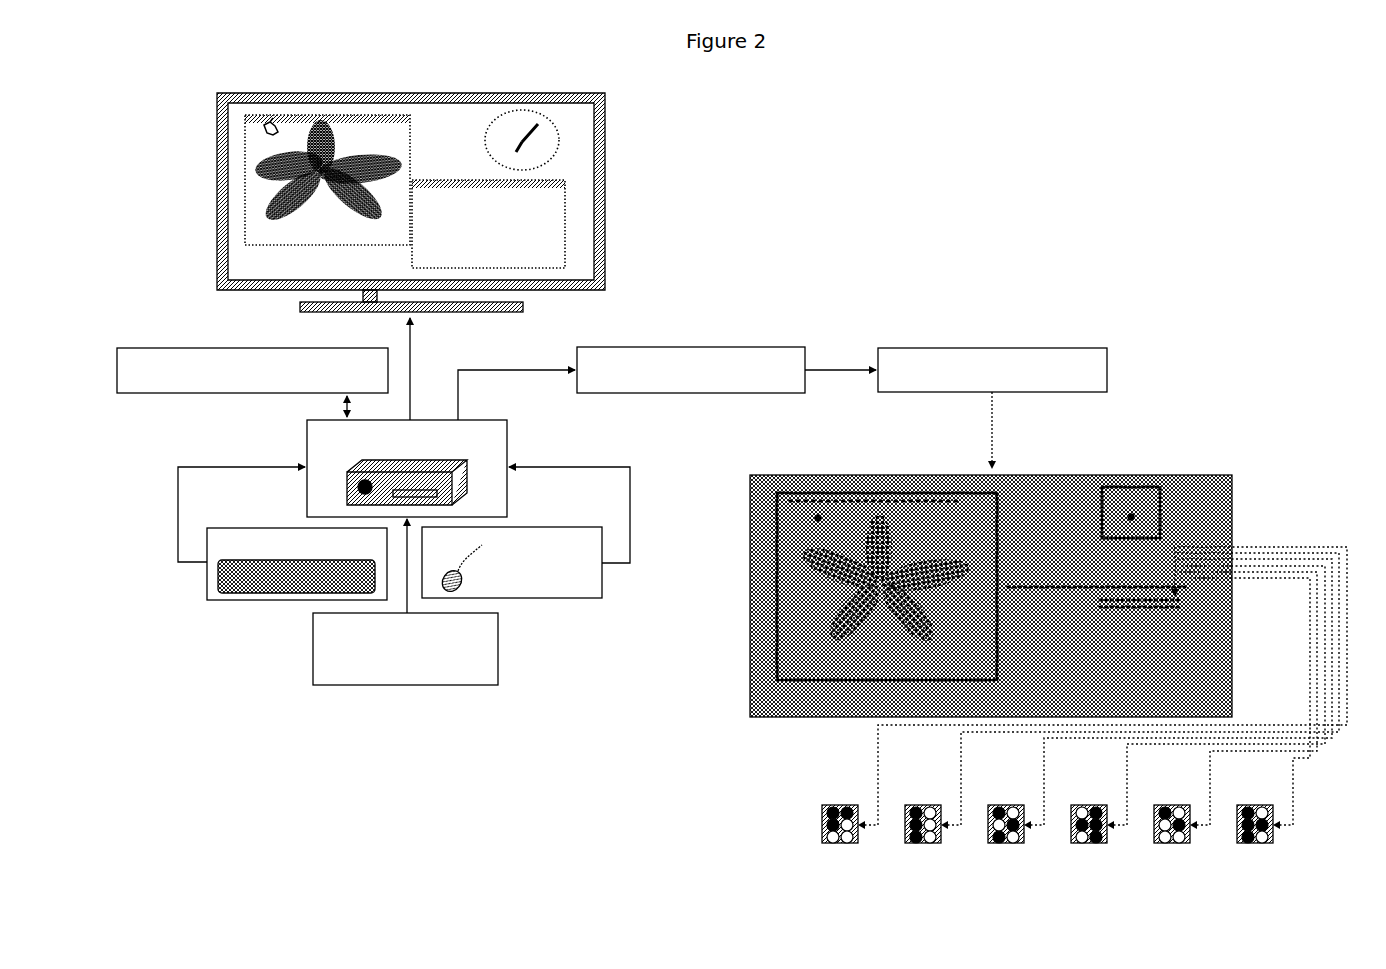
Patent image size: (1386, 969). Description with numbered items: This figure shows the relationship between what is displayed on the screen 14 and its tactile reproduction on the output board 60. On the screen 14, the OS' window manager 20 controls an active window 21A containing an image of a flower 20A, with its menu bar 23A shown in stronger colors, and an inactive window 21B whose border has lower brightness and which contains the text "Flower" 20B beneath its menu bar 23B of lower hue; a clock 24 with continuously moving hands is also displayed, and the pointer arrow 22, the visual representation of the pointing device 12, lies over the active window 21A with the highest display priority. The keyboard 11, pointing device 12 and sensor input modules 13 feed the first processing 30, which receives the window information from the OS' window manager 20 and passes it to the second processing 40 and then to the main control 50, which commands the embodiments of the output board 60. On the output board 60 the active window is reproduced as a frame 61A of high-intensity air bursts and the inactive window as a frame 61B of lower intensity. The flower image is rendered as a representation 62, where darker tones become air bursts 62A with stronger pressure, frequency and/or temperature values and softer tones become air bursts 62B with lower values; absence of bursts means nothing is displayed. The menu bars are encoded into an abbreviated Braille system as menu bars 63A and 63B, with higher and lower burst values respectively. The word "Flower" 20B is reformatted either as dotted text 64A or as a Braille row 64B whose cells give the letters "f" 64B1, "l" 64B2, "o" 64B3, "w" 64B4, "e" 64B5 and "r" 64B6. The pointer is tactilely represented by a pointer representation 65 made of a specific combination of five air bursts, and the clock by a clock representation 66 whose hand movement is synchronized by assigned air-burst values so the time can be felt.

The keyboard 11 is at (210, 603).
The pointing device 12 is at (533, 600).
The sensor input modules 13 is at (313, 630).
The screen 14 is at (217, 240).
The OS' window manager 20 is at (253, 395).
The image of flower 20A is at (262, 158).
The text "Flower" 20B is at (535, 225).
The active window 21A is at (245, 178).
The inactive window 21B is at (567, 258).
The pointer arrow 22 is at (262, 130).
The menu bar of active window 23A is at (245, 117).
The menu bar of inactive window 23B is at (568, 186).
The clock 24 is at (562, 122).
The first processing 30 is at (510, 452).
The second processing 40 is at (663, 395).
The main control 50 is at (900, 395).
The output board 60 is at (1087, 472).
The active window representation 61A is at (777, 662).
The inactive window representation 61B is at (1208, 683).
The representation of the flower image 62 is at (830, 581).
The high-definition air bursts 62A is at (885, 568).
The lower-definition air bursts 62B is at (865, 590).
The menu bar of active window (tactile) 63A is at (790, 501).
The menu bar of inactive window (tactile) 63B is at (1018, 585).
The "Flower" word in dotted definition 64A is at (1177, 638).
The "flower" text in Braille system 64B is at (1182, 610).
The Braille value of "f" 64B1 is at (840, 845).
The Braille value of "l" 64B2 is at (923, 845).
The Braille value of "o" 64B3 is at (1006, 845).
The Braille value of "w" 64B4 is at (1089, 845).
The Braille value of "e" 64B5 is at (1172, 845).
The Braille value of "r" 64B6 is at (1255, 845).
The representation of the pointer 65 is at (815, 520).
The representation of the clock 66 is at (1163, 503).